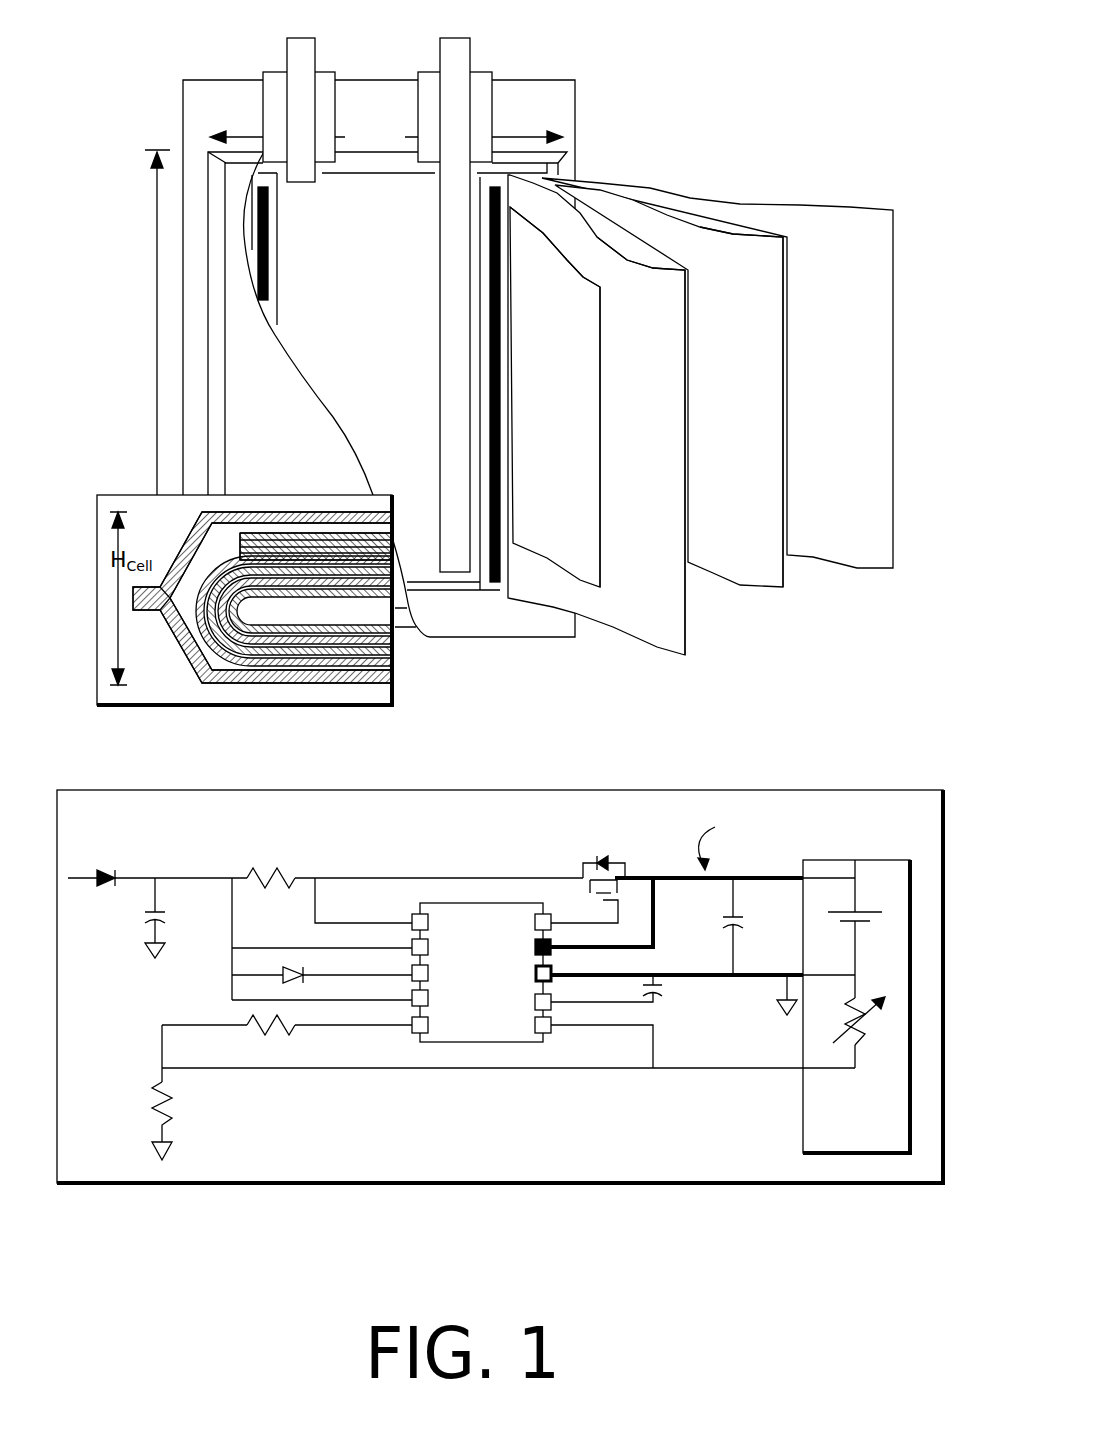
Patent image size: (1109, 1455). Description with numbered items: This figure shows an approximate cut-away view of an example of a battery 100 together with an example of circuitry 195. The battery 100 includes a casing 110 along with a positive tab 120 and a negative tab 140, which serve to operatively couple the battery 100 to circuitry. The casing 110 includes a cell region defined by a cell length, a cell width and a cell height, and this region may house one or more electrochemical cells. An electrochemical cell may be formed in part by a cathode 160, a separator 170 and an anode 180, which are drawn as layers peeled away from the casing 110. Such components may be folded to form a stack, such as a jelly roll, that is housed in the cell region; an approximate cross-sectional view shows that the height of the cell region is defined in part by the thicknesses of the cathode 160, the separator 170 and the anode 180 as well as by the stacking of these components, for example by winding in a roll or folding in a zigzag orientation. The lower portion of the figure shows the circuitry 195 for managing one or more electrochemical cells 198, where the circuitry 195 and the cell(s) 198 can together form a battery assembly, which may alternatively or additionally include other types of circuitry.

The battery 100 is at (738, 32).
The casing 110 is at (298, 456).
The positive tab 120 is at (293, 48).
The negative tab 140 is at (460, 58).
The cathode 160 is at (537, 265).
The separator 170 is at (598, 273).
The anode 180 is at (677, 245).
The circuitry 195 is at (372, 831).
The electrochemical cells 198 is at (875, 1137).